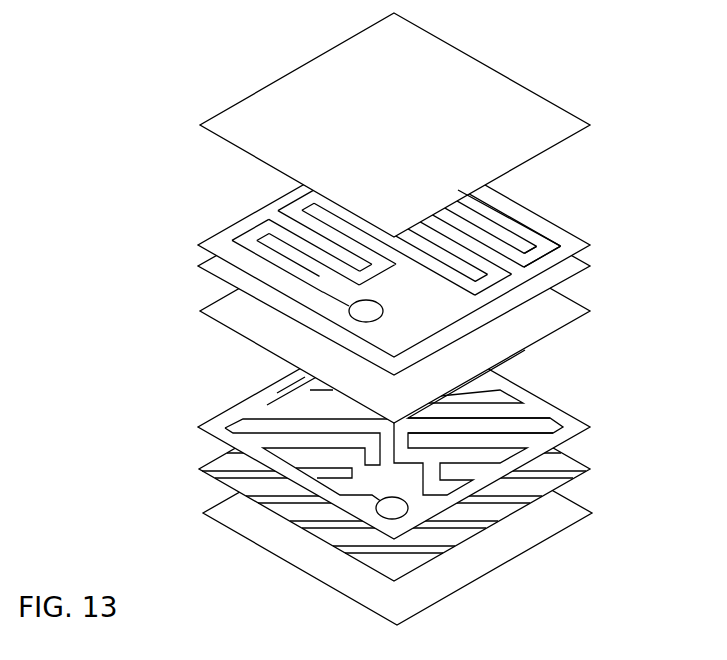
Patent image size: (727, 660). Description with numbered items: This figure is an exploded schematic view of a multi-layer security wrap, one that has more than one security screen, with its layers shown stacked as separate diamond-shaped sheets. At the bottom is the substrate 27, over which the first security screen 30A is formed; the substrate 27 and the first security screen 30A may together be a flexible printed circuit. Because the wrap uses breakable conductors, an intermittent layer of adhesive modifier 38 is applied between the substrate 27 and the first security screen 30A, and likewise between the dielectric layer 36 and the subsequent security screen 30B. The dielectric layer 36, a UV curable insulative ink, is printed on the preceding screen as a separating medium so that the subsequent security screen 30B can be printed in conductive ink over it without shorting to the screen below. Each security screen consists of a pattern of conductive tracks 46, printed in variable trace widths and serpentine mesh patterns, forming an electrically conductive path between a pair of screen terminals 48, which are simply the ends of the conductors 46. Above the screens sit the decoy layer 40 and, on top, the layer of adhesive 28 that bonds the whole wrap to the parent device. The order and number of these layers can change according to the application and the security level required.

The substrate 27 is at (538, 528).
The layer of adhesive 28 is at (502, 106).
The first security screen 30A is at (213, 246).
The subsequent security screen 30B is at (208, 416).
The dielectric layer 36 is at (232, 333).
The adhesive modifier 38 is at (228, 487).
The decoy layer 40 is at (205, 265).
The conductive track 46 is at (545, 418).
The screen terminals 48 is at (525, 593).